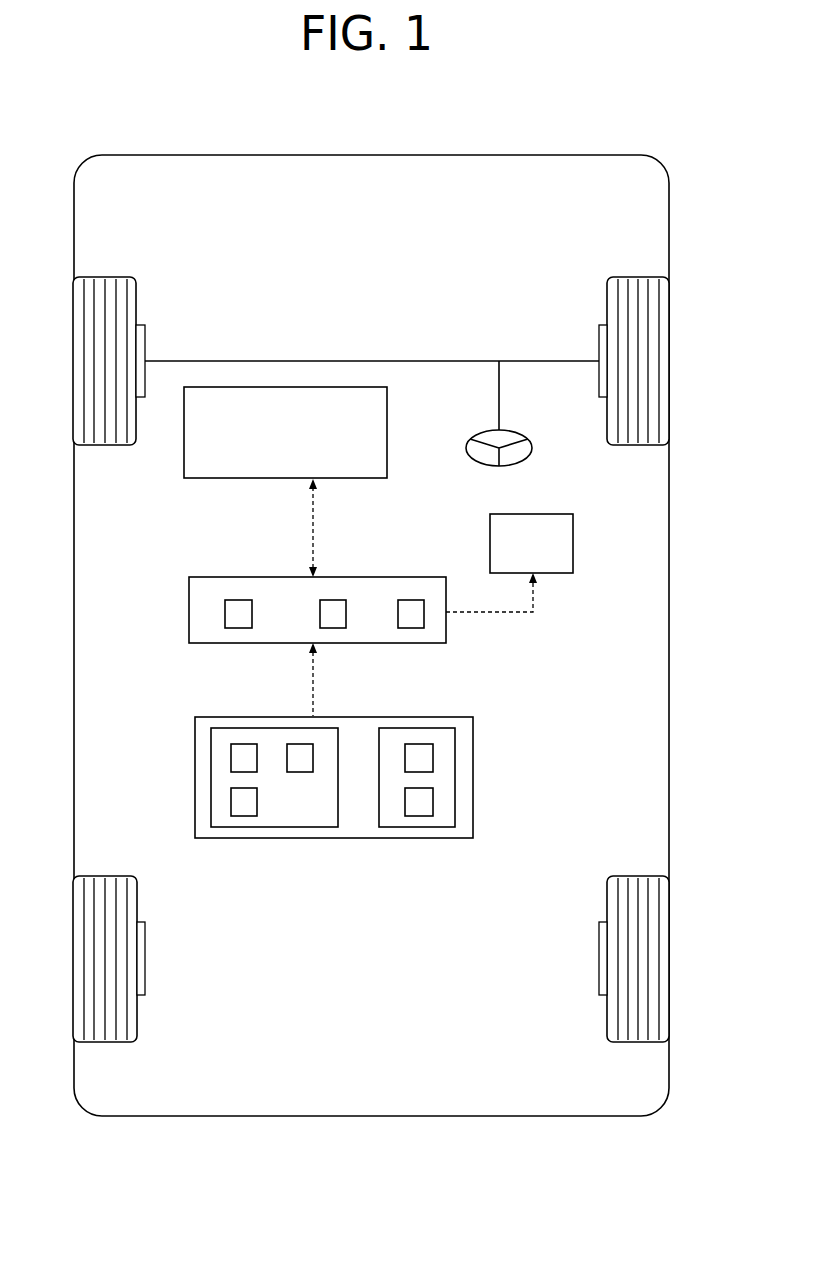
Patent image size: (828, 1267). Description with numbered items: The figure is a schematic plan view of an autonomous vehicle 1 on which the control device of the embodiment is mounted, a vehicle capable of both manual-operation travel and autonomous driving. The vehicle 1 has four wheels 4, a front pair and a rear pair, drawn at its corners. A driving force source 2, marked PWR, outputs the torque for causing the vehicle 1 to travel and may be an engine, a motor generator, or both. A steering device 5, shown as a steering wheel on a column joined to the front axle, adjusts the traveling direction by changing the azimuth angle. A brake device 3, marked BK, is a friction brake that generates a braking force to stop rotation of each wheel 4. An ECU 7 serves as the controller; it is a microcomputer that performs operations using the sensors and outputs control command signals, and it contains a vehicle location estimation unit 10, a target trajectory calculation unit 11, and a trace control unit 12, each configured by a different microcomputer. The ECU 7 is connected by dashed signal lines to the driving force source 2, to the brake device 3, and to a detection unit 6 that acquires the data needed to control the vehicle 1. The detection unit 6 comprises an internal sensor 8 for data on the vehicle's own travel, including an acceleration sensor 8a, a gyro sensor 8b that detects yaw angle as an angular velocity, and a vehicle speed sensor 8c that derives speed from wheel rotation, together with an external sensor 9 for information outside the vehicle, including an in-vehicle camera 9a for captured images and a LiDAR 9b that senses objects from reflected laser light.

The vehicle 1 is at (386, 1057).
The driving force source 2 is at (250, 480).
The brake device 3 is at (575, 542).
The wheels 4 is at (97, 364).
The steering device 5 is at (476, 428).
The detection unit 6 is at (195, 778).
The ECU 7 is at (189, 612).
The internal sensor 8 is at (272, 728).
The acceleration sensor 8a is at (236, 744).
The gyro sensor 8b is at (310, 744).
The vehicle speed sensor 8c is at (244, 816).
The external sensor 9 is at (420, 728).
The in-vehicle camera 9a is at (433, 755).
The LiDAR 9b is at (418, 816).
The vehicle location estimation unit 10 is at (238, 600).
The target trajectory calculation unit 11 is at (334, 600).
The trace control unit 12 is at (412, 600).